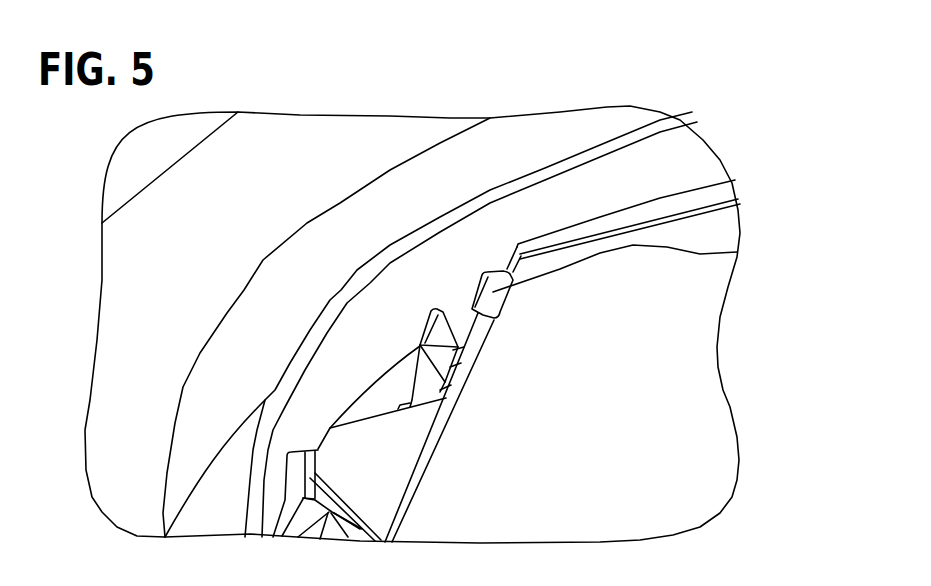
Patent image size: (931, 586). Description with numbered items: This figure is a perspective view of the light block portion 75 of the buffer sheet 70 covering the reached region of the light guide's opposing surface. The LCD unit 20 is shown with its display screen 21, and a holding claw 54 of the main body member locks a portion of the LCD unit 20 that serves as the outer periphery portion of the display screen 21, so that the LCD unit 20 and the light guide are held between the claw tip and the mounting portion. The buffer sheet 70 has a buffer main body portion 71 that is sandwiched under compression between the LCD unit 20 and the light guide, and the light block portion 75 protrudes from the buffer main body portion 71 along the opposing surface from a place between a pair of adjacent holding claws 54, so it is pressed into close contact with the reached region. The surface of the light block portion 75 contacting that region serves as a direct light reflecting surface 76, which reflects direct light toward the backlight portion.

The LCD unit 20 is at (658, 311).
The display screen 21 is at (422, 512).
The holding claw 54 is at (737, 252).
The buffer sheet 70 is at (517, 312).
The buffer main body portion 71 is at (688, 188).
The light block portion 75 is at (275, 535).
The direct light reflecting surface 76 is at (325, 514).